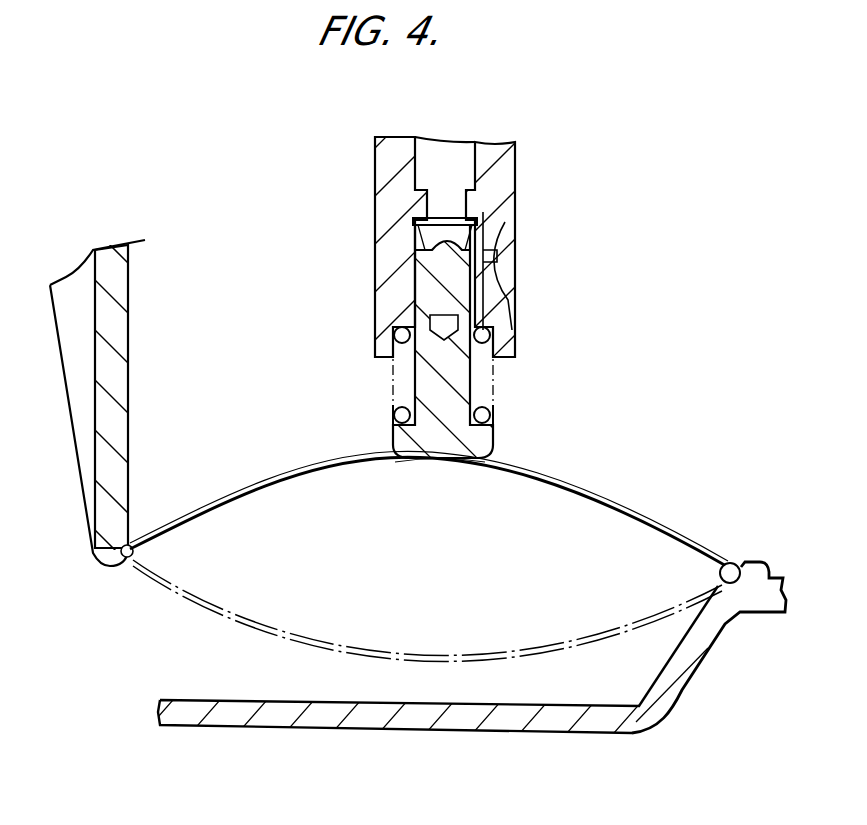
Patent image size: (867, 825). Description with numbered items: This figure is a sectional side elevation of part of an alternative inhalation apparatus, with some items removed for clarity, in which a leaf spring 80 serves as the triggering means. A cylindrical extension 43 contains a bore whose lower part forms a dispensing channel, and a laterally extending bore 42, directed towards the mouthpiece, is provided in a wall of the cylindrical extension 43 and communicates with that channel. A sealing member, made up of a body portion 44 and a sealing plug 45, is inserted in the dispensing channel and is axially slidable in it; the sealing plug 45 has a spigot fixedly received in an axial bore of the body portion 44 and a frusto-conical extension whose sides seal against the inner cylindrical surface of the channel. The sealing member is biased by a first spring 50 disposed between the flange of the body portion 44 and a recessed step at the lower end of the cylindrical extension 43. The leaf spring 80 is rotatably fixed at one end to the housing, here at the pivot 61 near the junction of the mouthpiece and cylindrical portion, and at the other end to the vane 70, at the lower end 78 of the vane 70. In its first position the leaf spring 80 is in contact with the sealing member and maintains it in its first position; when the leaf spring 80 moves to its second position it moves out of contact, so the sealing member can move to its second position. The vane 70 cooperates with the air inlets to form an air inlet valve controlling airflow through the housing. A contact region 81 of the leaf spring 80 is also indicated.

The laterally extending bore 42 is at (505, 242).
The cylindrical extension 43 is at (376, 238).
The body portion 44 is at (455, 400).
The sealing plug 45 is at (485, 282).
The first spring 50 is at (393, 414).
The pivot 61 is at (730, 563).
The vane 70 is at (72, 478).
The lower end of the vane 78 is at (102, 568).
The leaf spring 80 is at (245, 485).
The spring contact portion 81 is at (402, 470).